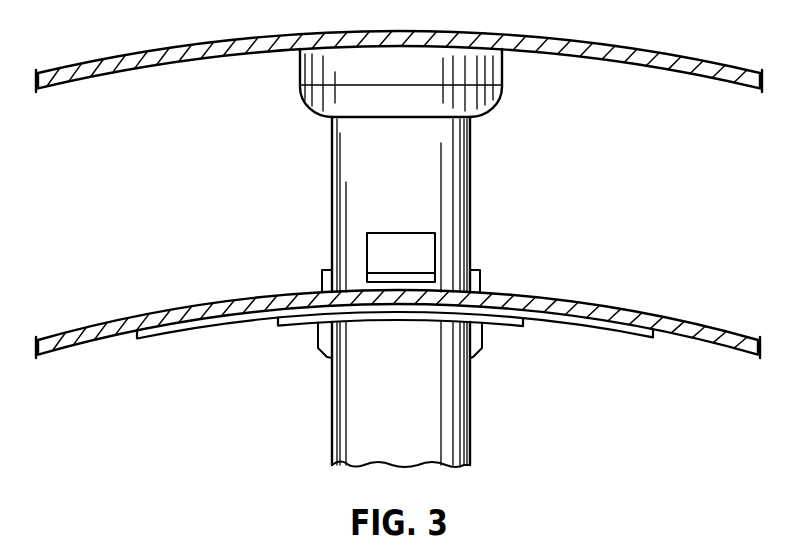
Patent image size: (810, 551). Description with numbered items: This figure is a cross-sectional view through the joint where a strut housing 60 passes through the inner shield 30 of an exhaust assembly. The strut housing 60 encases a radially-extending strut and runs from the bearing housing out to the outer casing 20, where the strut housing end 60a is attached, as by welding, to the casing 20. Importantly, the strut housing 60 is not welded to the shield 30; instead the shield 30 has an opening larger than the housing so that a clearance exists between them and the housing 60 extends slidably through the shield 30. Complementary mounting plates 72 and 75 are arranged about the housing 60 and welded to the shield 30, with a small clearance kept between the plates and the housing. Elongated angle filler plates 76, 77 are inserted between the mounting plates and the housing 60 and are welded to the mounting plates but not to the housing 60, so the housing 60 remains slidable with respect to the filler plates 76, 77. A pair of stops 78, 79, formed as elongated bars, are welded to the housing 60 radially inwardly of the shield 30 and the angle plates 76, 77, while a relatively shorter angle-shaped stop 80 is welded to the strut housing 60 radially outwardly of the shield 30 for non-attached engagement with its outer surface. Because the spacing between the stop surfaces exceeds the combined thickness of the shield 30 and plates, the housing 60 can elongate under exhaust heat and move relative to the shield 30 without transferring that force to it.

The outer casing 20 is at (98, 60).
The shield 30 is at (73, 331).
The strut housing 60 is at (332, 170).
The strut housing end 60a is at (503, 71).
The mounting plate 72 is at (187, 331).
The mounting plate 75 is at (290, 327).
The angle filler plate 76 is at (322, 275).
The angle filler plate 77 is at (480, 276).
The stop 78 is at (318, 340).
The stop 79 is at (482, 340).
The angle-shaped stop 80 is at (400, 238).